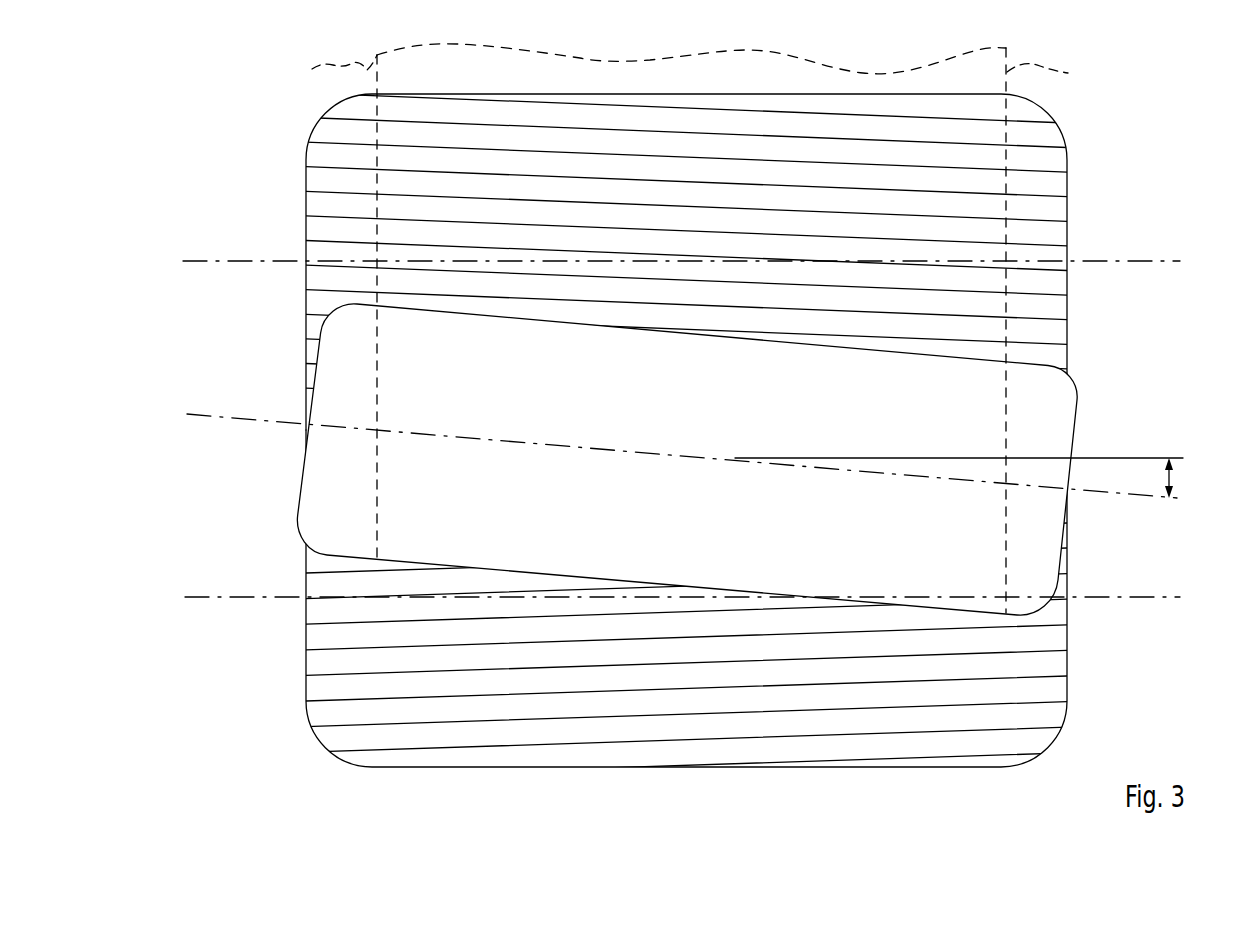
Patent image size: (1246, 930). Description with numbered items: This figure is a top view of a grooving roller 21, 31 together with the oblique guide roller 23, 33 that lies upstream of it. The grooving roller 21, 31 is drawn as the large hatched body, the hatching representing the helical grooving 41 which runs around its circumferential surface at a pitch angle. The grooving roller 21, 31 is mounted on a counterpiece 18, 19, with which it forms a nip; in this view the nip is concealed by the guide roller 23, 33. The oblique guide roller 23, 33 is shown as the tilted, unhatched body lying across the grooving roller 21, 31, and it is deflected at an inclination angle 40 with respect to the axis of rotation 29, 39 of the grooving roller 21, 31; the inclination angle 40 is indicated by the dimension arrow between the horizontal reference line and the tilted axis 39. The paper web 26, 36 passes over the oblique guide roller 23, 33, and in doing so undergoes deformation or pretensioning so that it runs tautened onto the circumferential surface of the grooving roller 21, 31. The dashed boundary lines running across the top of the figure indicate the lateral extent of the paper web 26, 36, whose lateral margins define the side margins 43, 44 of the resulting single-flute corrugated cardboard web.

The counterpiece 18 is at (612, 598).
The counterpiece 19 is at (296, 571).
The grooving roller 21 is at (612, 262).
The oblique guide roller 23 is at (687, 459).
The paper web 26 is at (1083, 330).
The axis of rotation 29 is at (240, 599).
The grooving roller 31 is at (296, 151).
The oblique guide roller 33 is at (623, 523).
The paper web 36 is at (1017, 554).
The axis of rotation 39 is at (247, 418).
The inclination angle 40 is at (1172, 481).
The helical grooving 41 is at (1060, 230).
The side margin 43 is at (738, 61).
The side margin 44 is at (330, 305).